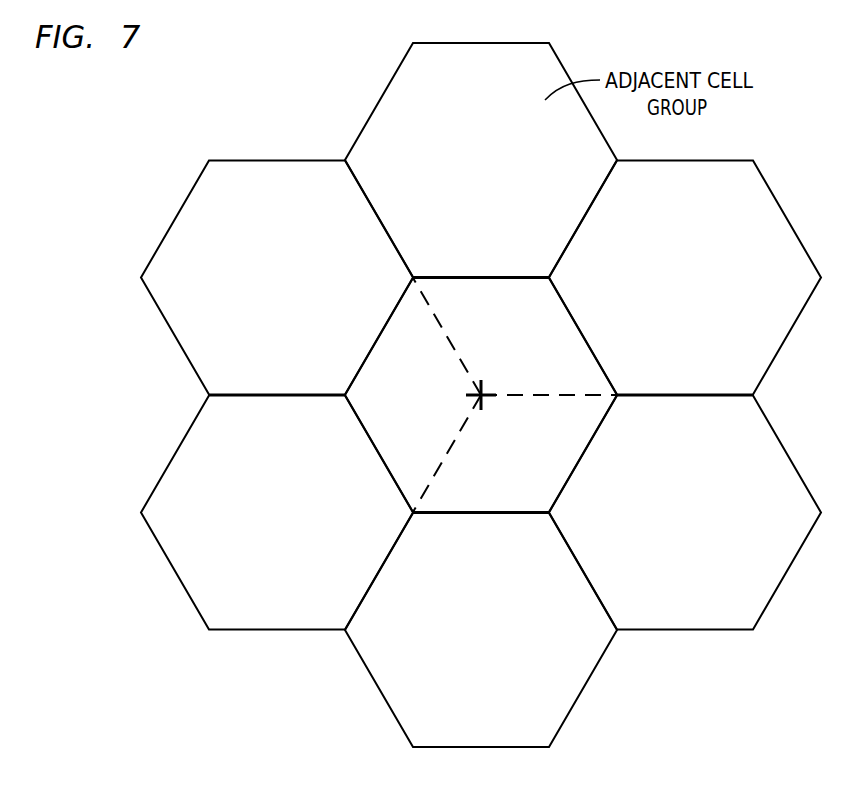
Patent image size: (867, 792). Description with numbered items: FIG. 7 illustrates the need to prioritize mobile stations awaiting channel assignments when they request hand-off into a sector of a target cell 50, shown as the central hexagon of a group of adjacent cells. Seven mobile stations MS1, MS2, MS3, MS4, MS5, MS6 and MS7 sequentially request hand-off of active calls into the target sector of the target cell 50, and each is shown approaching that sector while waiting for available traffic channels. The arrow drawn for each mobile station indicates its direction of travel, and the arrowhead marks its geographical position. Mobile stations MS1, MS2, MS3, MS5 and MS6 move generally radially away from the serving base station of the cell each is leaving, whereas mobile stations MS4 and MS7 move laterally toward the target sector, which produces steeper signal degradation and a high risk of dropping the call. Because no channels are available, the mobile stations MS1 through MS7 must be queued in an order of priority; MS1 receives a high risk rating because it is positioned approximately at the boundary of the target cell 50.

The target cell 50 is at (550, 373).
The mobile station MS1 is at (376, 448).
The mobile station MS2 is at (392, 307).
The mobile station MS3 is at (371, 475).
The mobile station MS4 is at (440, 470).
The mobile station MS5 is at (363, 355).
The mobile station MS6 is at (366, 323).
The mobile station MS7 is at (448, 333).